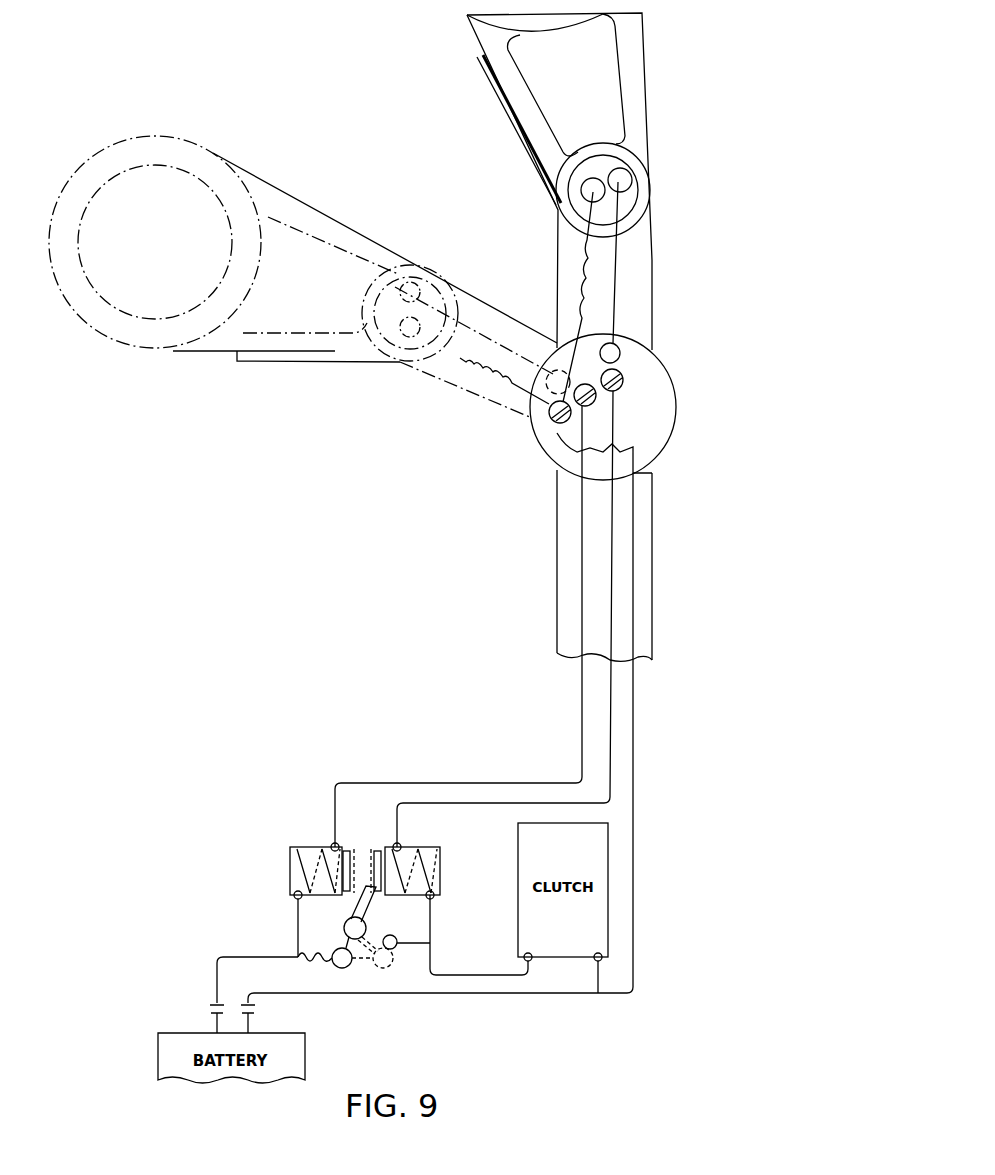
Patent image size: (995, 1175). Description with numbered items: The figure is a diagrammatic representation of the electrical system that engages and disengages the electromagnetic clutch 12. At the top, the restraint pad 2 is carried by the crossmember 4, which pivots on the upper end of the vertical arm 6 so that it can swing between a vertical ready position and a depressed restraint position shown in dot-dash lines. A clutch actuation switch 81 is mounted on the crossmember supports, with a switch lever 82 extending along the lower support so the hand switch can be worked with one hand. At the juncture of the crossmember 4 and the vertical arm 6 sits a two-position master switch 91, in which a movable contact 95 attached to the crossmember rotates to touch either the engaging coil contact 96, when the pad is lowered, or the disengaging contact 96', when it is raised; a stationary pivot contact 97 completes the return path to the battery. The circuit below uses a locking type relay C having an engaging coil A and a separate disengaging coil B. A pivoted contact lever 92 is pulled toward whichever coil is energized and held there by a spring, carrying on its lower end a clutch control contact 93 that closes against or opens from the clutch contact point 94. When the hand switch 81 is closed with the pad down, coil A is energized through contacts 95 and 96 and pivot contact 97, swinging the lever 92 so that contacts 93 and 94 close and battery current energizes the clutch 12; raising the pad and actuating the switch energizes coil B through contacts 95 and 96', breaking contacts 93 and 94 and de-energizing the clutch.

The restraint pad 2 is at (278, 180).
The clutch actuation switch 81 is at (420, 283).
The switch lever 82 is at (258, 363).
The crossmember 4 is at (656, 286).
The vertical arm 6 is at (652, 589).
The master switch 91 is at (678, 399).
The movable contact 95 is at (553, 372).
The disengaging contact 96' is at (655, 369).
The engaging coil contact 96 is at (521, 615).
The stationary pivot contact 97 is at (549, 417).
The electromagnetic clutch 12 is at (632, 845).
The contact lever 92 is at (372, 850).
The engaging relay coil A is at (290, 873).
The disengaging relay coil B is at (442, 890).
The locking type relay C is at (297, 922).
The clutch control contact 93 is at (343, 969).
The clutch contact point 94 is at (394, 949).